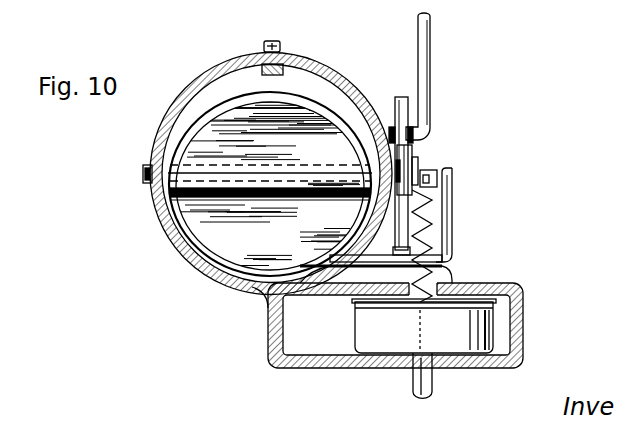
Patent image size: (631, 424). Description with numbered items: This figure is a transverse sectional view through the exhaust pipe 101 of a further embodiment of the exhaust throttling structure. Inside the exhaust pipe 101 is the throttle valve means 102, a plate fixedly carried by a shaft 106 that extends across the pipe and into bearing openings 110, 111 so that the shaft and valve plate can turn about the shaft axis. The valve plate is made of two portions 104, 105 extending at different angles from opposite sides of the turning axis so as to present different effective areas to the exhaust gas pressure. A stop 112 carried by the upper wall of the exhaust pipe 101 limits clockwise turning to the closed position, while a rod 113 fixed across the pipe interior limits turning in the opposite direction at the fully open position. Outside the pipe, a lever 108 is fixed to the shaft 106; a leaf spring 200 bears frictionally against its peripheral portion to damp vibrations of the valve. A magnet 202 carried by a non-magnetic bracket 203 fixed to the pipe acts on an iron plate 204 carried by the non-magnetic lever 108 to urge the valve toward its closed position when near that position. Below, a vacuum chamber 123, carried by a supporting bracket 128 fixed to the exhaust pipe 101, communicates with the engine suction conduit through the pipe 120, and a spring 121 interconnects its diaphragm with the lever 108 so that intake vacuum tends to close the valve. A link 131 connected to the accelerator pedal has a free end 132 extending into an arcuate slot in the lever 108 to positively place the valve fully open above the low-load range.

The exhaust pipe 101 is at (232, 63).
The throttle valve means 102 is at (326, 97).
The throttle valve plate portion 104 is at (232, 127).
The throttle valve plate portion 105 is at (212, 232).
The shaft 106 is at (143, 175).
The lever 108 is at (406, 104).
The bearing opening 110 is at (393, 140).
The bearing opening 111 is at (152, 150).
The stop 112 is at (283, 45).
The rod 113 is at (270, 200).
The pipe 120 is at (428, 383).
The spring 121 is at (434, 276).
The vacuum chamber 123 is at (500, 326).
The supporting bracket 128 is at (520, 293).
The link 131 is at (431, 48).
The free end 132 is at (403, 130).
The spring 200 is at (414, 156).
The magnet 202 is at (437, 172).
The non-magnetic bracket 203 is at (450, 223).
The iron plate 204 is at (418, 168).